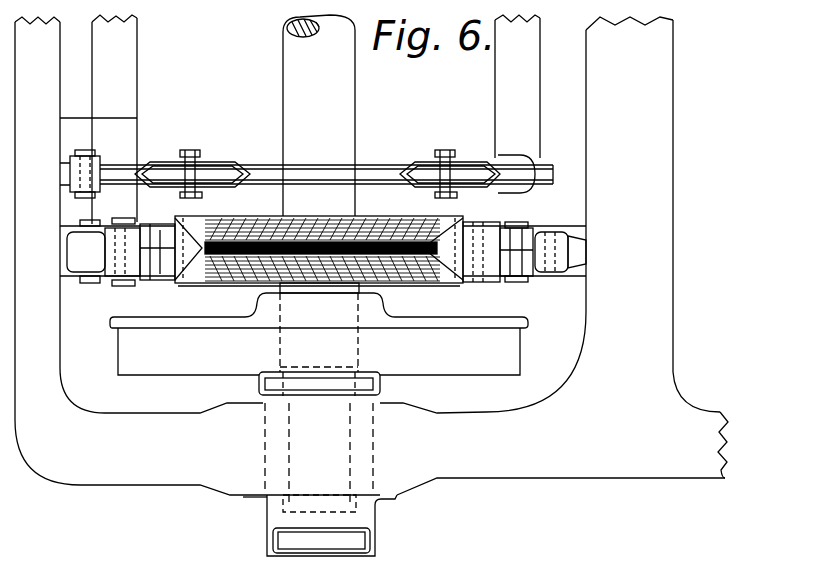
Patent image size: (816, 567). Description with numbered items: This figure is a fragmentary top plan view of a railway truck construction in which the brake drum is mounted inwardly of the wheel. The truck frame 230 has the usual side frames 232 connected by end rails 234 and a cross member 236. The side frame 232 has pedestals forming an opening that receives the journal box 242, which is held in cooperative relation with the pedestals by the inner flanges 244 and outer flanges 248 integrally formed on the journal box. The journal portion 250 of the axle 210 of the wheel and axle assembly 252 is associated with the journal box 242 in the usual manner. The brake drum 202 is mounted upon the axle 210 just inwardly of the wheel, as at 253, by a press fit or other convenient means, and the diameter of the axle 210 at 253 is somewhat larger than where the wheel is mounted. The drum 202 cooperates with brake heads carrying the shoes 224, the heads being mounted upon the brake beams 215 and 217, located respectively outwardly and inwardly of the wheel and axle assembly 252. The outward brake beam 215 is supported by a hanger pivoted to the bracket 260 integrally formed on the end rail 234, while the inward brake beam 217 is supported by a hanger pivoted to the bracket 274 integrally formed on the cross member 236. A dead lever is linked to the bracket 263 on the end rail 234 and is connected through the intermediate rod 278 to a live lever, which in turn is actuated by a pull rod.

The brake drum 202 is at (378, 217).
The axle 210 is at (343, 96).
The brake beam 215 is at (125, 88).
The brake beam 217 is at (505, 93).
The shoes 224 is at (478, 216).
The truck frame 230 is at (652, 418).
The side frames 232 is at (730, 478).
The end rails 234 is at (137, 118).
The cross member 236 is at (640, 212).
The journal box 242 is at (280, 521).
The inner flanges 244 is at (250, 390).
The outer flanges 248 is at (268, 500).
The journal portion 250 is at (335, 456).
The wheel and axle assembly 252 is at (480, 318).
The drum mounting point 253 is at (262, 286).
The bracket 260 is at (83, 278).
The bracket 263 is at (80, 150).
The bracket 274 is at (570, 240).
The intermediate rod 278 is at (366, 172).